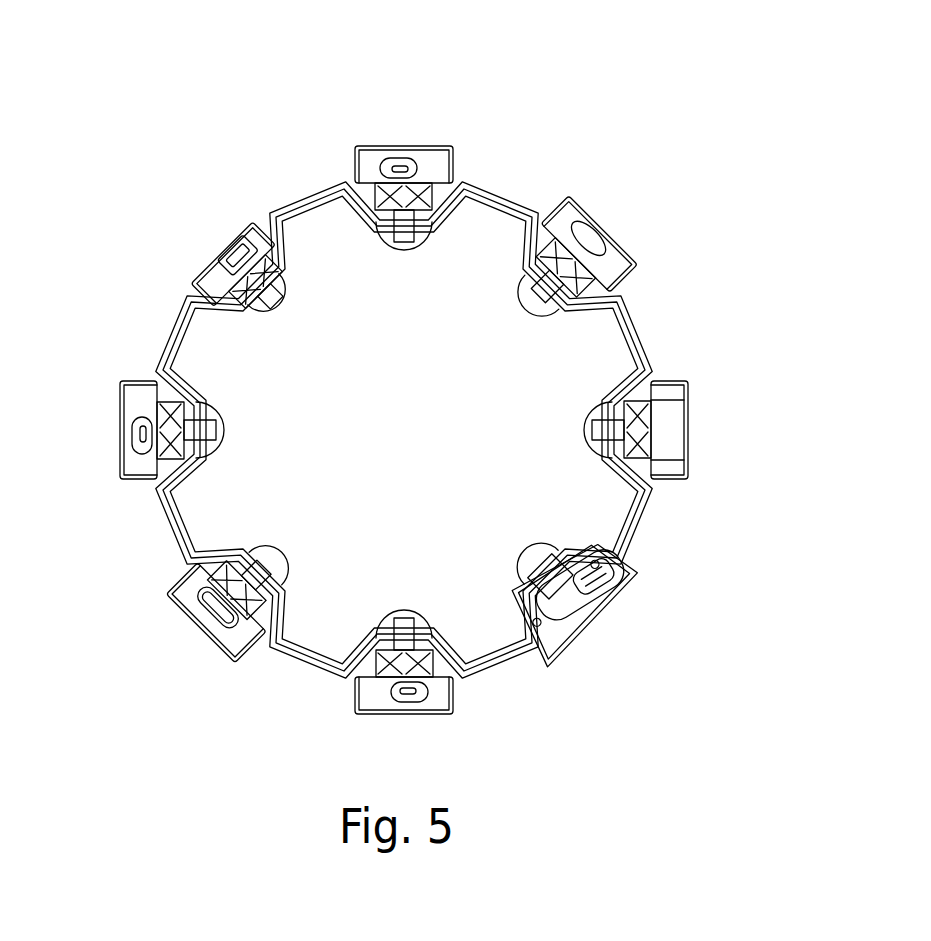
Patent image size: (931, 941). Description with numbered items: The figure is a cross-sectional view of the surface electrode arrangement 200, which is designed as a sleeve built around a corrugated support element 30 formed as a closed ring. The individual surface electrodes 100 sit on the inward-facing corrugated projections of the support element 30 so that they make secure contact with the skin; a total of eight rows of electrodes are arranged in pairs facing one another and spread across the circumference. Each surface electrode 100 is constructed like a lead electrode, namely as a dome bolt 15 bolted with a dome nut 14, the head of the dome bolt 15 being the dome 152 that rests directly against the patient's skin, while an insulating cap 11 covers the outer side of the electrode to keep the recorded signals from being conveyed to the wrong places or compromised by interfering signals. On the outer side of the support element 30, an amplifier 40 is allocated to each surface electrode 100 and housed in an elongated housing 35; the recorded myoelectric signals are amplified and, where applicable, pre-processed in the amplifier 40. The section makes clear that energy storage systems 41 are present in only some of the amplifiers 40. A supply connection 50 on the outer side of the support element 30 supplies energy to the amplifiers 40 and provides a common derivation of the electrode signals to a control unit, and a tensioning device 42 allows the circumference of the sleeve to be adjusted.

The surface electrode arrangement 200 is at (537, 130).
The support element 30 is at (158, 338).
The amplifier 40 is at (423, 175).
The elongated housing 35 is at (357, 140).
The energy storage system 41 is at (627, 253).
The tensioning device 42 is at (590, 612).
The surface electrode 100 is at (300, 285).
The supply connection 50 is at (222, 248).
The insulating cap 11 is at (208, 278).
The dome nut 14 is at (240, 237).
The dome bolt 15 is at (262, 312).
The dome 152 is at (273, 294).